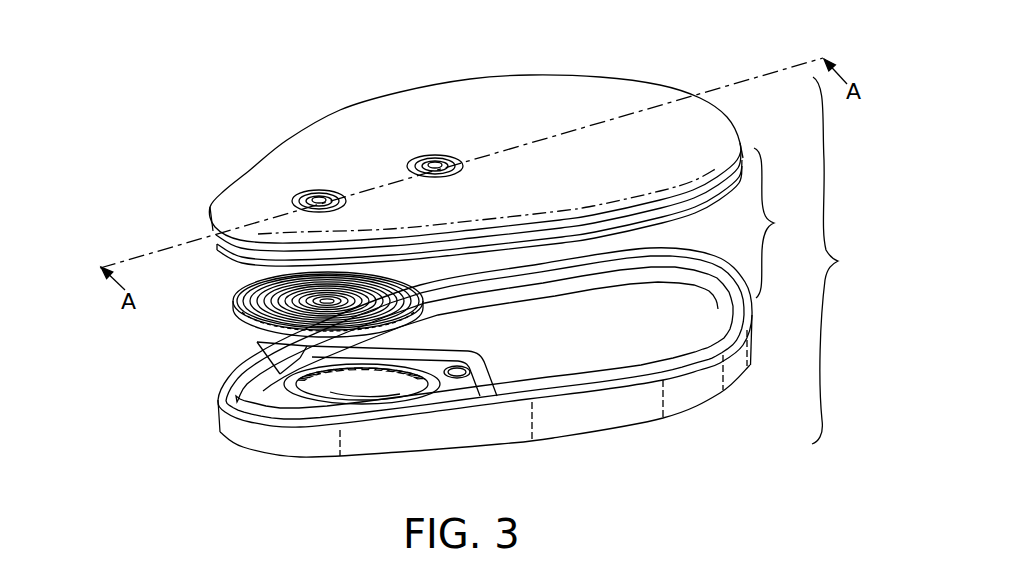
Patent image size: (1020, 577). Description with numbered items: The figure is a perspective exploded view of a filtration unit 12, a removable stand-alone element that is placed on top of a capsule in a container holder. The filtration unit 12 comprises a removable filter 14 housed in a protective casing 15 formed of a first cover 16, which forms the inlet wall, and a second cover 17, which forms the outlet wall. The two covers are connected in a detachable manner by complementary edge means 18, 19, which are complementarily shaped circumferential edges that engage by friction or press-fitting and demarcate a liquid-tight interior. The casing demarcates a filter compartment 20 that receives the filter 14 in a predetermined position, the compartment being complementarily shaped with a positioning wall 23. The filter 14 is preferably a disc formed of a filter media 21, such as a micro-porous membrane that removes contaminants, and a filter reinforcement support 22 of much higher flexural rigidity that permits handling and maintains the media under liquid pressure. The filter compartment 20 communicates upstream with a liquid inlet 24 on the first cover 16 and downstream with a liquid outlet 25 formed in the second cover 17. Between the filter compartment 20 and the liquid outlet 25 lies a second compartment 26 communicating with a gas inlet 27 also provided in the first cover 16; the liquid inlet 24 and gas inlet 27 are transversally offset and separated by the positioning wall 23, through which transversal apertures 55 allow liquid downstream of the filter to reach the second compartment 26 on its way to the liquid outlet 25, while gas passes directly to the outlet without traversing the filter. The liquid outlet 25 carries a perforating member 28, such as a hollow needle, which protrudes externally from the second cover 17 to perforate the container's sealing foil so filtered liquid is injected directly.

The filtration unit 12 is at (842, 260).
The removable filter 14 is at (227, 315).
The protective casing 15 is at (780, 223).
The first cover 16 is at (552, 90).
The second cover 17 is at (606, 420).
The complementary edge means 18 is at (678, 212).
The complementary edge means 19 is at (724, 309).
The filter compartment 20 is at (408, 400).
The filter media 21 is at (254, 299).
The filter reinforcement support 22 is at (280, 342).
The positioning wall 23 is at (363, 368).
The liquid inlet 24 is at (313, 197).
The liquid outlet 25 is at (470, 372).
The second compartment 26 is at (457, 394).
The gas inlet 27 is at (433, 162).
The perforating member 28 is at (333, 378).
The transversal apertures 55 is at (405, 375).